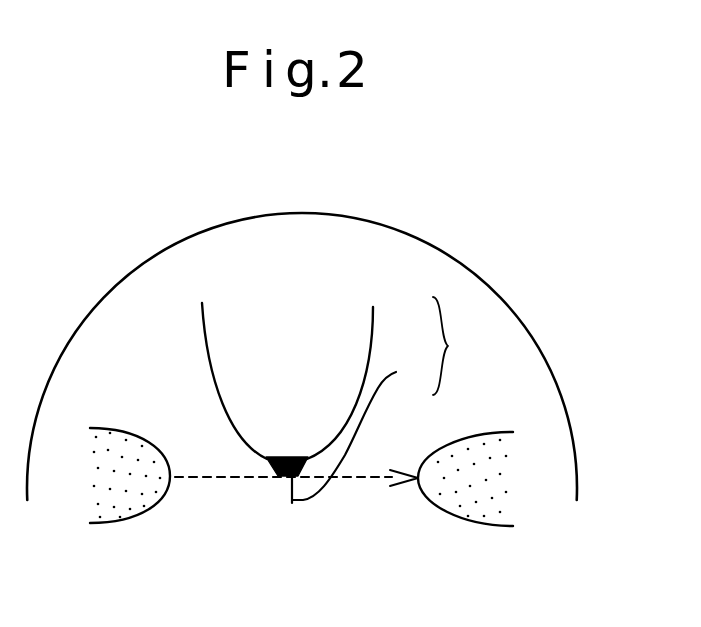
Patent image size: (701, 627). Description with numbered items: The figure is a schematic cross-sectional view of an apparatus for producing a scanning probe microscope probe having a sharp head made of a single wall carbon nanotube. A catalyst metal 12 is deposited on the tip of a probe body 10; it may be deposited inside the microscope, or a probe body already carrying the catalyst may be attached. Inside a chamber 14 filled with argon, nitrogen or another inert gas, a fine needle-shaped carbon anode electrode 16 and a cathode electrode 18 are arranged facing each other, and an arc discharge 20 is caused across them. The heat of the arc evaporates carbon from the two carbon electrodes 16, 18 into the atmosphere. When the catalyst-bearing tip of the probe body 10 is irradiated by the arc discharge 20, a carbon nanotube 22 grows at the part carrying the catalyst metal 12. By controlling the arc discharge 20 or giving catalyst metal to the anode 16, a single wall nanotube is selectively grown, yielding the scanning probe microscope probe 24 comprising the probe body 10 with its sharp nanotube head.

The probe body 10 is at (328, 352).
The catalyst metal 12 is at (267, 461).
The chamber 14 is at (422, 238).
The carbon anode electrode 16 is at (115, 495).
The cathode electrode 18 is at (483, 503).
The arc discharge 20 is at (365, 477).
The carbon nanotube 22 is at (364, 429).
The scanning probe microscope probe 24 is at (464, 346).